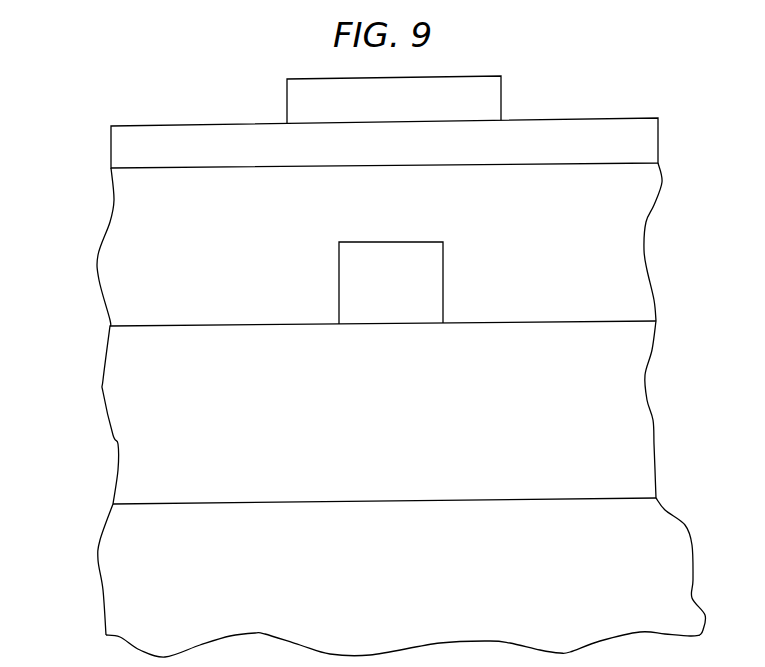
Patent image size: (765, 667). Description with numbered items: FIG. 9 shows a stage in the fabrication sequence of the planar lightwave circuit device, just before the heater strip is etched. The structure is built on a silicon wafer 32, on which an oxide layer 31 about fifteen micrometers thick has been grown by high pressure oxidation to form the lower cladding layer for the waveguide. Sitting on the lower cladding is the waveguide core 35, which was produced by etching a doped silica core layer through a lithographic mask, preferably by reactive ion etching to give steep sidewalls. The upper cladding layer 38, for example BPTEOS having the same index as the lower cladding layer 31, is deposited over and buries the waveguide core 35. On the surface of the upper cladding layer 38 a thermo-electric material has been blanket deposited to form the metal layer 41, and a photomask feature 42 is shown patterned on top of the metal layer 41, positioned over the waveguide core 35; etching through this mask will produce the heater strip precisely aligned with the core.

The photomask feature 42 is at (287, 86).
The metal layer 41 is at (110, 150).
The upper cladding layer 38 is at (97, 256).
The waveguide core 35 is at (339, 273).
The oxide layer 31 is at (101, 392).
The silicon wafer 32 is at (117, 588).